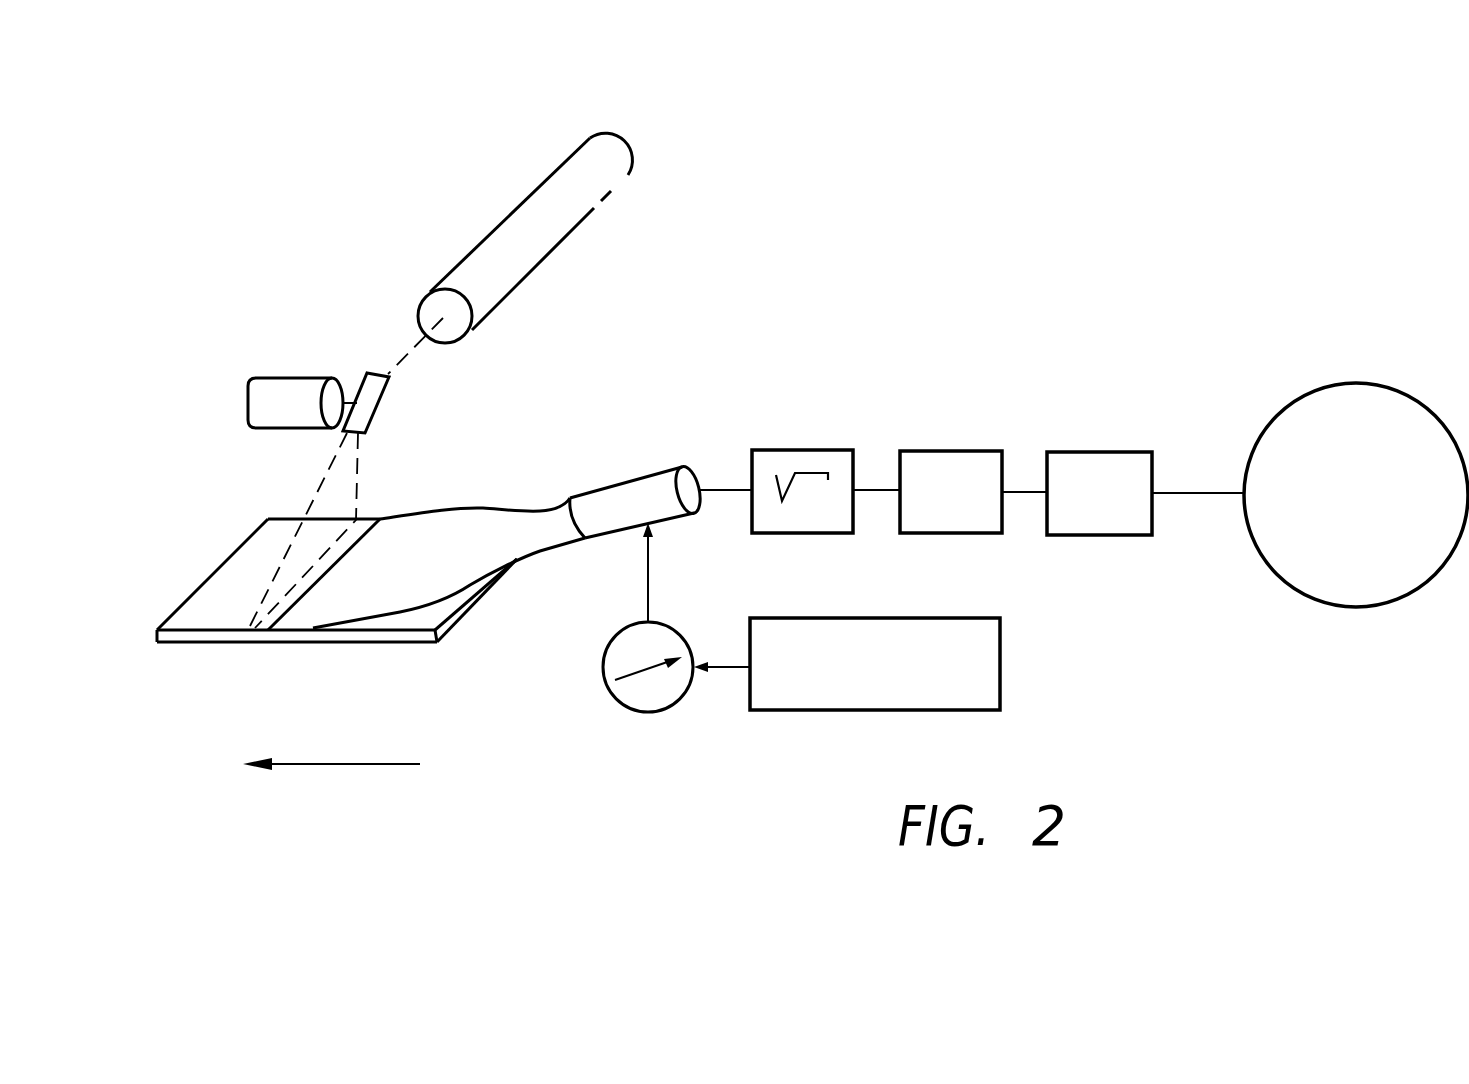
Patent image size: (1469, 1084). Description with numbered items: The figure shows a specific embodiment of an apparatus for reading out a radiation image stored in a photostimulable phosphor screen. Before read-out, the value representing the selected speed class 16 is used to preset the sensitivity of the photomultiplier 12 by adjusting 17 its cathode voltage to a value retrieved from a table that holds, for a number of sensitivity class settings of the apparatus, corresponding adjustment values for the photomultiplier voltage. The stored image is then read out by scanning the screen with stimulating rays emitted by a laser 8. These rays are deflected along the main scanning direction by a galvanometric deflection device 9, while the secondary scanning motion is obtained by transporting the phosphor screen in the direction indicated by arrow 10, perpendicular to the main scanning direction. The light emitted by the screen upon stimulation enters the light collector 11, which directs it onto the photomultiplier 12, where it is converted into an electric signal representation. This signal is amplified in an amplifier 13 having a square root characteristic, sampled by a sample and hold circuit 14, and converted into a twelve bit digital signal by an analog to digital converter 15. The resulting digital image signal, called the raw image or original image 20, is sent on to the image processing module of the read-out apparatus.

The laser 8 is at (542, 213).
The galvanometric deflection device 9 is at (370, 400).
The arrow 10 is at (291, 758).
The light collector 11 is at (428, 510).
The photomultiplier 12 is at (620, 482).
The amplifier 13 is at (780, 450).
The sample and hold circuit 14 is at (928, 451).
The analog to digital converter 15 is at (1073, 452).
The selected speed class value 16 is at (920, 712).
The cathode voltage adjustment 17 is at (665, 712).
The raw image 20 is at (1250, 458).